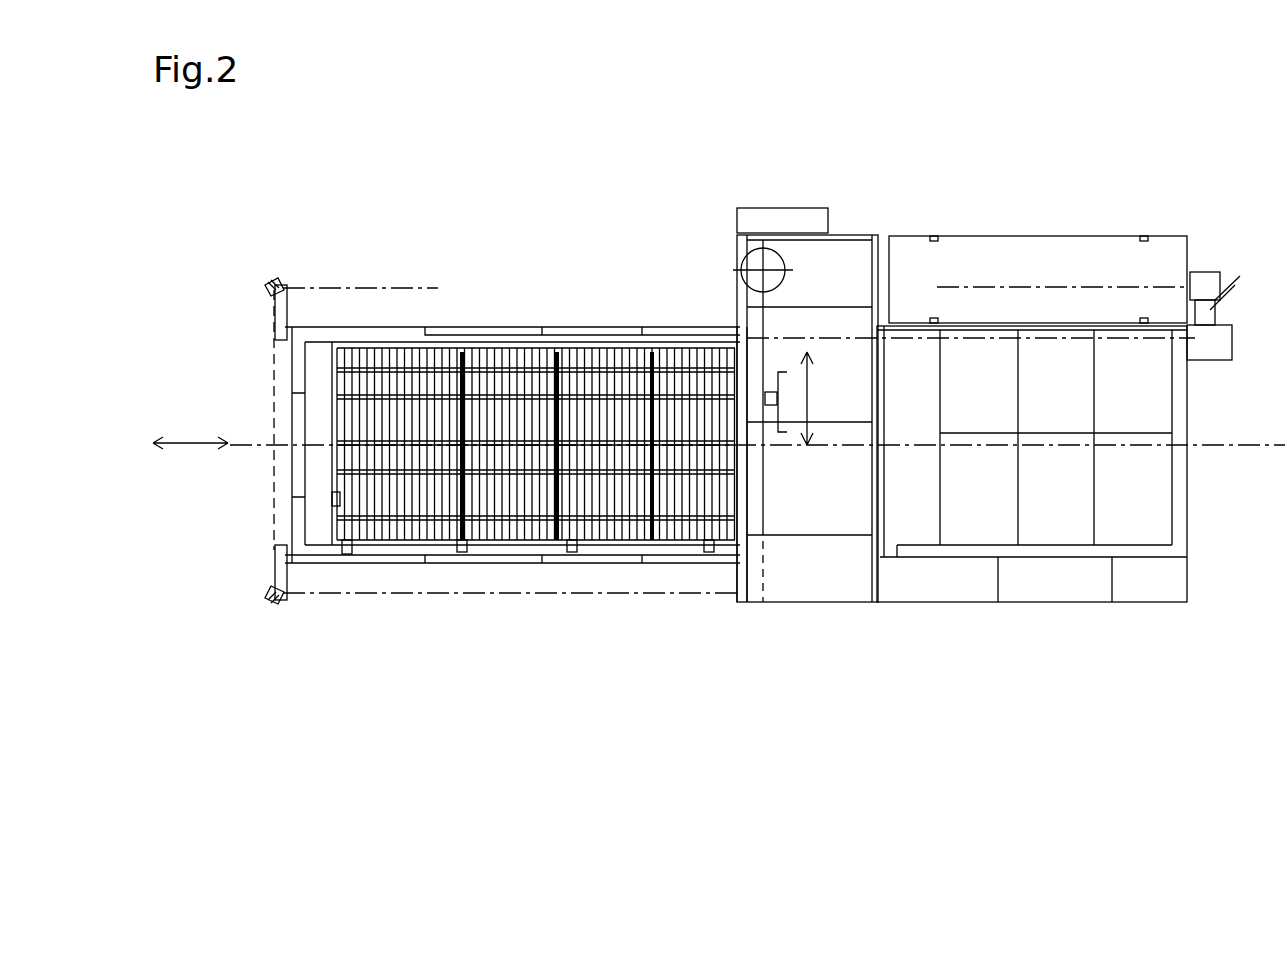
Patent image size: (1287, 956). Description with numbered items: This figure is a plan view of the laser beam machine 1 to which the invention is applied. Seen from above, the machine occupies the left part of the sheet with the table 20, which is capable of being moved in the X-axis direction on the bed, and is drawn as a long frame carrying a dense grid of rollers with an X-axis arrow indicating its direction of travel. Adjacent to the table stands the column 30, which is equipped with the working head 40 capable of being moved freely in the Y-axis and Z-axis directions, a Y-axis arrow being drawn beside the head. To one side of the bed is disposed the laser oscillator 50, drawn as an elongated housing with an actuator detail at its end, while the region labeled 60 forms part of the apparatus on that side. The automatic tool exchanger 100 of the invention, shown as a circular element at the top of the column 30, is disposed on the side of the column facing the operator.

The laser beam machine 1 is at (1189, 182).
The table 20 is at (495, 520).
The column 30 is at (824, 497).
The working head 40 is at (768, 392).
The laser oscillator 50 is at (1043, 265).
The discharge station 60 is at (1047, 590).
The automatic tool exchanger 100 is at (770, 235).